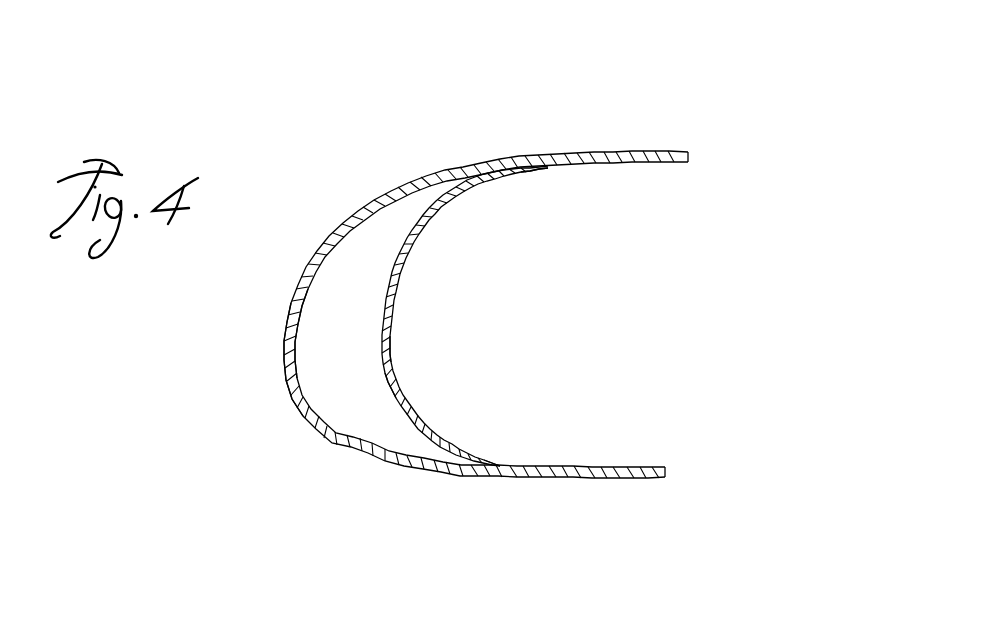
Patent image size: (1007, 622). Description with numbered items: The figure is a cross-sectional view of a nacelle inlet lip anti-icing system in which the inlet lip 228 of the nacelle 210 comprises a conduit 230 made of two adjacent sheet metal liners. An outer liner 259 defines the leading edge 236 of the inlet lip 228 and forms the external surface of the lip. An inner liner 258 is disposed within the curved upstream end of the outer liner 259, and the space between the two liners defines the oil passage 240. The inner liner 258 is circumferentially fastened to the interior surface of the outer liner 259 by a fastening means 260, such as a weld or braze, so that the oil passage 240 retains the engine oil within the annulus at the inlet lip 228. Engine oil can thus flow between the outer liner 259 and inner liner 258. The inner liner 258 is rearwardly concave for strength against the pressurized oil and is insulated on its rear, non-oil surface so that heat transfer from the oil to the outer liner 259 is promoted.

The nacelle 210 is at (486, 242).
The inlet lip 228 is at (285, 400).
The conduit 230 is at (403, 282).
The leading edge 236 is at (285, 332).
The oil passage 240 is at (330, 297).
The inner liner 258 is at (397, 383).
The outer liner 259 is at (360, 210).
The fastening means 260 is at (503, 460).